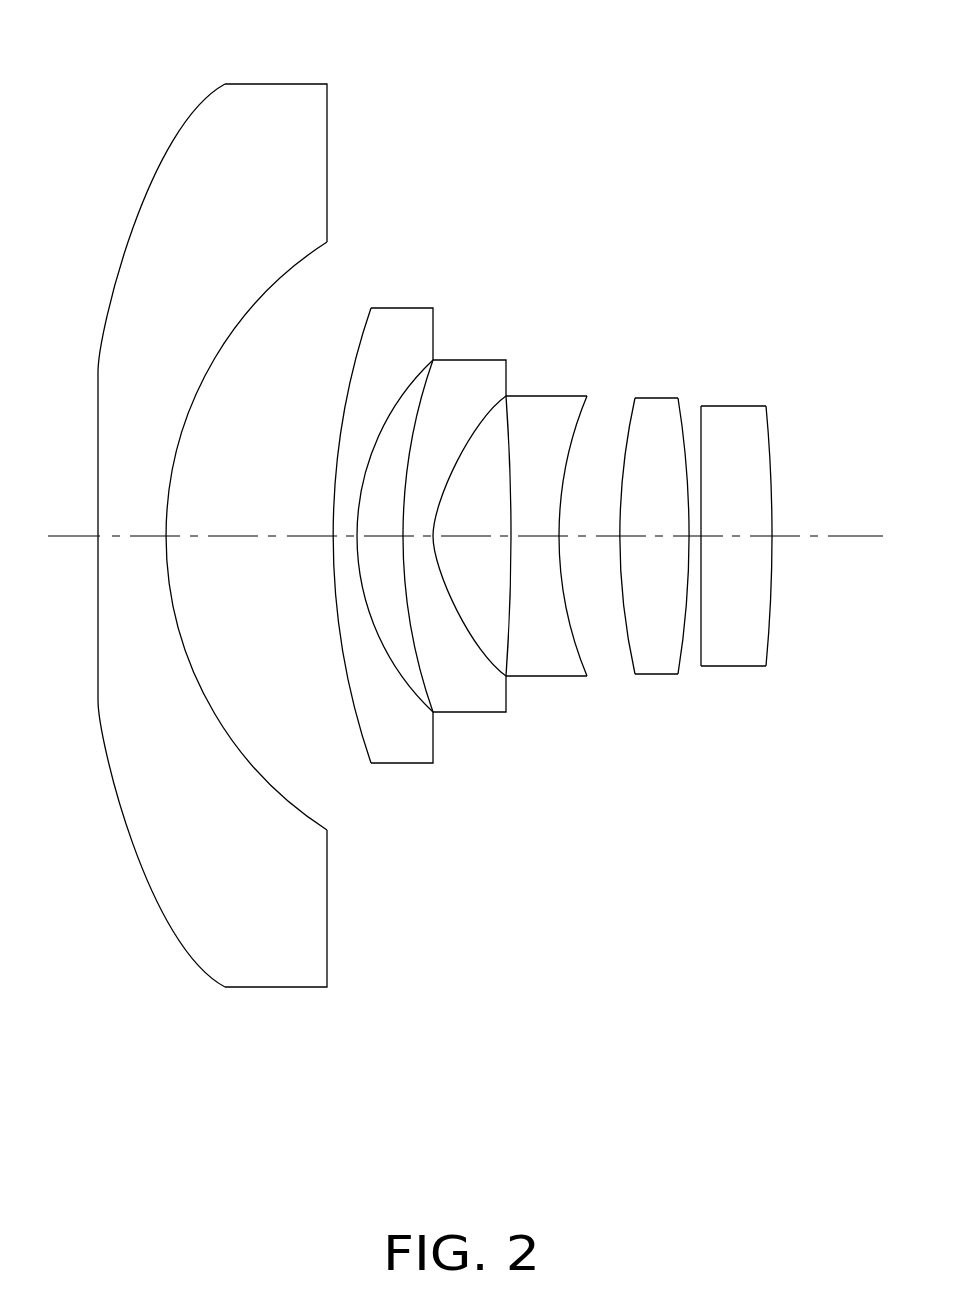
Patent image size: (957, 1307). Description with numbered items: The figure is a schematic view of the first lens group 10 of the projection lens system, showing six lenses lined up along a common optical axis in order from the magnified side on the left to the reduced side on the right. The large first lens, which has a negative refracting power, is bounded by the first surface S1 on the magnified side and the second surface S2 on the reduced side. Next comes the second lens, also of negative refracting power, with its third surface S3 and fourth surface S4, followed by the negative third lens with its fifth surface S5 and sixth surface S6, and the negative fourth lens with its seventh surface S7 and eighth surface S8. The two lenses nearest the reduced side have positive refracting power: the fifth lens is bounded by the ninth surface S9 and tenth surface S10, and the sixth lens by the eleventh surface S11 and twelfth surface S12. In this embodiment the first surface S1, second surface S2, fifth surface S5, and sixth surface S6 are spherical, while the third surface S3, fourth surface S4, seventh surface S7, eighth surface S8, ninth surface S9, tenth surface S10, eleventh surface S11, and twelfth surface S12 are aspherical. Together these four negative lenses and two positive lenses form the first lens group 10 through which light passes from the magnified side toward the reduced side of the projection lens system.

The first lens group 10 is at (467, 67).
The first surface S1 is at (163, 160).
The second surface S2 is at (232, 325).
The third surface S3 is at (358, 352).
The fourth surface S4 is at (413, 373).
The fifth surface S5 is at (435, 385).
The sixth surface S6 is at (485, 408).
The seventh surface S7 is at (508, 430).
The eighth surface S8 is at (577, 450).
The ninth surface S9 is at (627, 443).
The tenth surface S10 is at (682, 408).
The eleventh surface S11 is at (702, 432).
The twelfth surface S12 is at (770, 444).